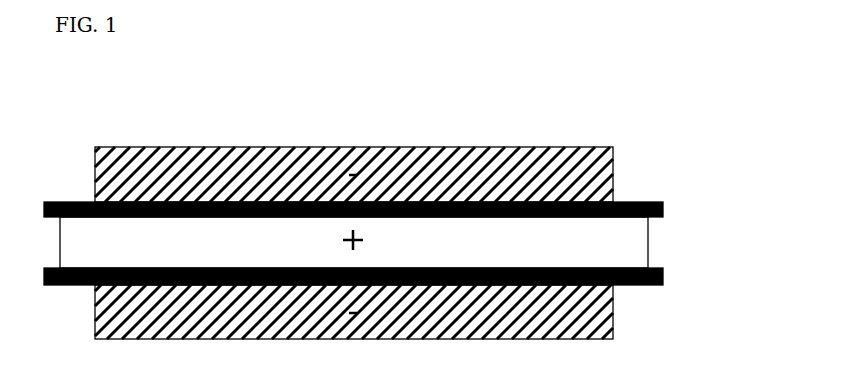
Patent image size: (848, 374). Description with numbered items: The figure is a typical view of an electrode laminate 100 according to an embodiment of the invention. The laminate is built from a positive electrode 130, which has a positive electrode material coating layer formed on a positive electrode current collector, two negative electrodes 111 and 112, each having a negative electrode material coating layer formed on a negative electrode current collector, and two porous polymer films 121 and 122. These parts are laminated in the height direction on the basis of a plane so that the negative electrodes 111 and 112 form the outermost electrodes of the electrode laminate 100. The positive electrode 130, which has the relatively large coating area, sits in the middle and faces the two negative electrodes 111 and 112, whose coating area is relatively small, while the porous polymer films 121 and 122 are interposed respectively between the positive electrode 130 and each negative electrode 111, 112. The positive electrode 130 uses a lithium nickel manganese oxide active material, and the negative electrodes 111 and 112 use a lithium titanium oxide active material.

The electrode laminate 100 is at (117, 113).
The negative electrode 111 is at (613, 178).
The porous polymer film 121 is at (663, 200).
The positive electrode 130 is at (648, 240).
The porous polymer film 122 is at (663, 283).
The negative electrode 112 is at (613, 303).